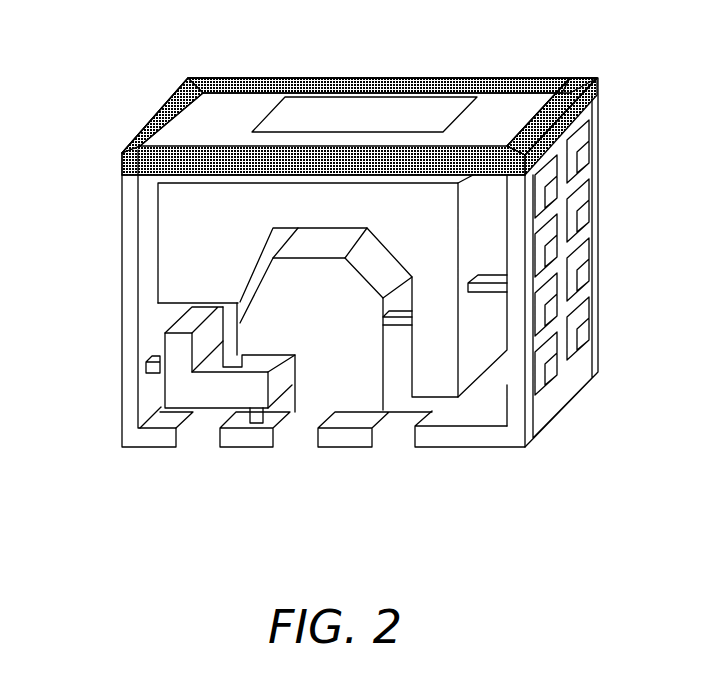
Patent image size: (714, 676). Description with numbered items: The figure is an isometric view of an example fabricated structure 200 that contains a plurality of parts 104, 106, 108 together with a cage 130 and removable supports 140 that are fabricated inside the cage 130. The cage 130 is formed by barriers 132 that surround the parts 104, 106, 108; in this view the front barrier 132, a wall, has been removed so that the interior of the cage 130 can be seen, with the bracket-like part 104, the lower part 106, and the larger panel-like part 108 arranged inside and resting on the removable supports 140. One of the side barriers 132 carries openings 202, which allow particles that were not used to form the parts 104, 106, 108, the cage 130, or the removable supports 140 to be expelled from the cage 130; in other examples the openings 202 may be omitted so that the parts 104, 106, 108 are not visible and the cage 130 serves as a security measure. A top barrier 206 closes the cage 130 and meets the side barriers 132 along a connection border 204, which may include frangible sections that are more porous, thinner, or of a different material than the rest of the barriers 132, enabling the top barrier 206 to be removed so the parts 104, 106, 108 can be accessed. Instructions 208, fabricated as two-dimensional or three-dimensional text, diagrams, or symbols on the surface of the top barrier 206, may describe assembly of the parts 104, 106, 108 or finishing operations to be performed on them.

The fabricated structure 200 is at (116, 60).
The cage 130 is at (122, 250).
The top barrier 206 is at (507, 102).
The connection border 204 is at (598, 86).
The instructions 208 is at (347, 100).
The barrier 132 is at (587, 385).
The openings 202 is at (594, 200).
The part 108 is at (458, 250).
The part 104 is at (162, 345).
The removable supports 140 is at (150, 374).
The part 106 is at (385, 411).